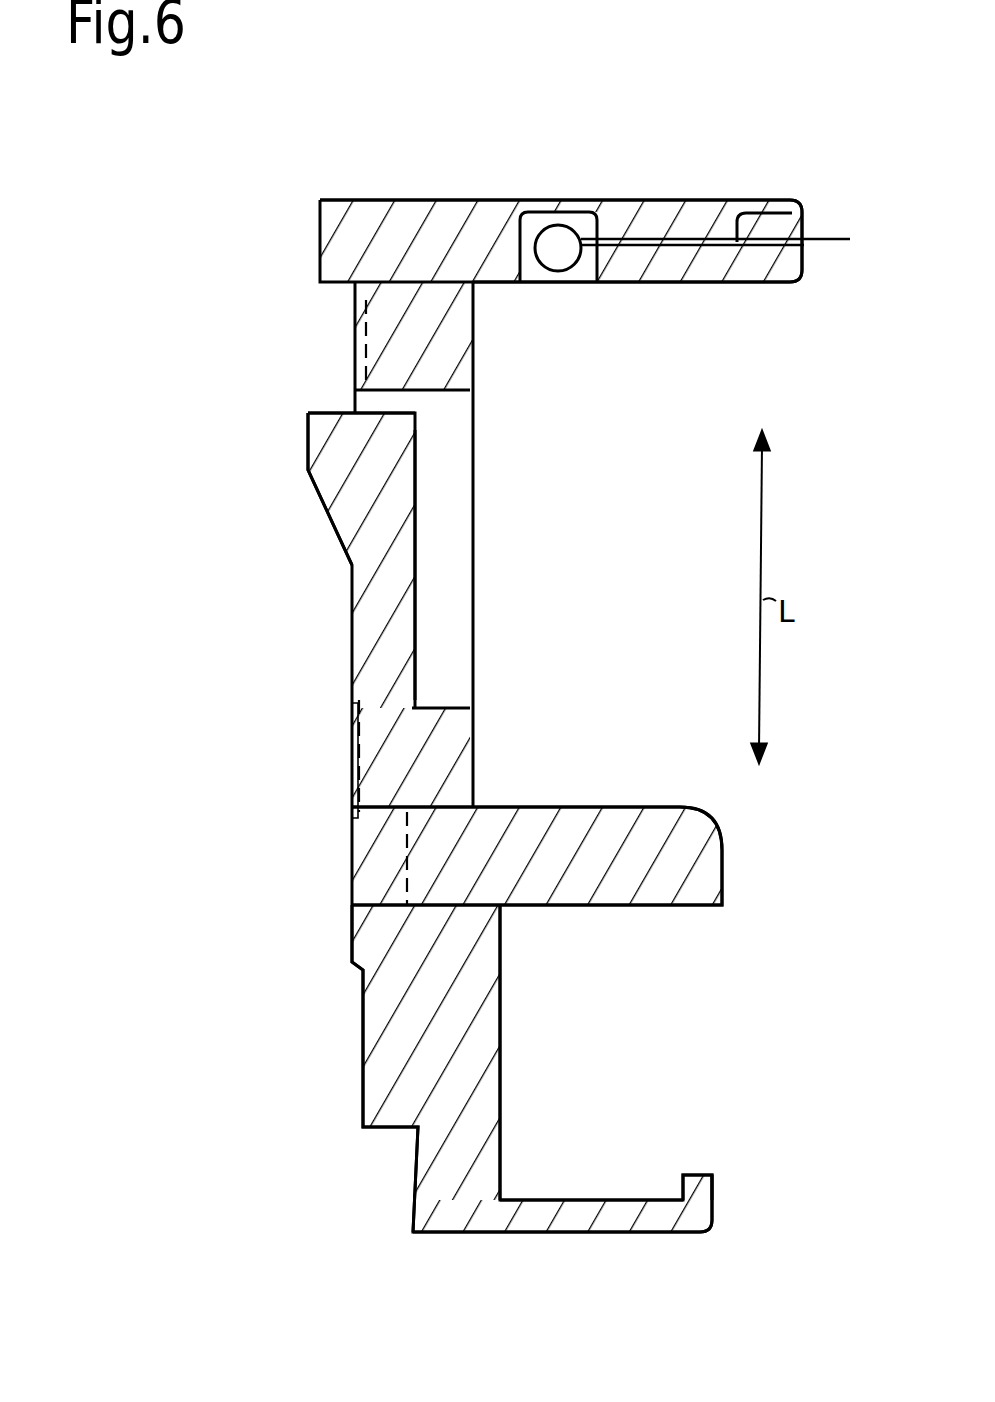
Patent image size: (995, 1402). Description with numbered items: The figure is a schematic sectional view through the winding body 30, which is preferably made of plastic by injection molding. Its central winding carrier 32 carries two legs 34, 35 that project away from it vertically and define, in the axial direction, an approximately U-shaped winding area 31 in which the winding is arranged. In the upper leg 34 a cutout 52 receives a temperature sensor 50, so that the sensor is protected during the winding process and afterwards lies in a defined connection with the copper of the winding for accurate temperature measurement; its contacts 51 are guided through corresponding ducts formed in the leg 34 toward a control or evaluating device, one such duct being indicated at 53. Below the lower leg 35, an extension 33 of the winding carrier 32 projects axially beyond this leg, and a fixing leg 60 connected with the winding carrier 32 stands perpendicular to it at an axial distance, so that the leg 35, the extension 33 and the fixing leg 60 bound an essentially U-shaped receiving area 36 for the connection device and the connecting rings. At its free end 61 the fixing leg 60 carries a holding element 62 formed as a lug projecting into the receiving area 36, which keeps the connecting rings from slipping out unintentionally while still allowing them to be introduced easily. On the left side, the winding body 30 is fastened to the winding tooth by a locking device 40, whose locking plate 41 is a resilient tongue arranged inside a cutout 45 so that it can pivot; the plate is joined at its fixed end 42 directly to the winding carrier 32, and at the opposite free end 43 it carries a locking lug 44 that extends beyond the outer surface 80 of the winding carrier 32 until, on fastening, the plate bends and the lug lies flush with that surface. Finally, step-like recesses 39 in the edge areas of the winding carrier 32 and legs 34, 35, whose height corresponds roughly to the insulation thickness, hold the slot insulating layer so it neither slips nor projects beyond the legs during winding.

The winding body 30 is at (222, 185).
The winding area 31 is at (620, 481).
The winding carrier 32 is at (472, 767).
The extension 33 is at (500, 1087).
The leg 34 is at (660, 212).
The leg 35 is at (650, 888).
The receiving area 36 is at (615, 1031).
The recess 39 is at (359, 750).
The locking device 40 is at (283, 513).
The locking plate 41 is at (400, 568).
The fixed end 42 is at (415, 706).
The free end 43 is at (415, 420).
The locking lug 44 is at (308, 430).
The cutout 45 is at (440, 505).
The temperature sensor 50 is at (552, 238).
The contacts 51 is at (832, 242).
The cutout 52 is at (540, 276).
The rod channel 53 is at (745, 212).
The fixing leg 60 is at (570, 1222).
The free end 61 is at (716, 1206).
The holding element 62 is at (688, 1178).
The outer surface 80 is at (350, 930).